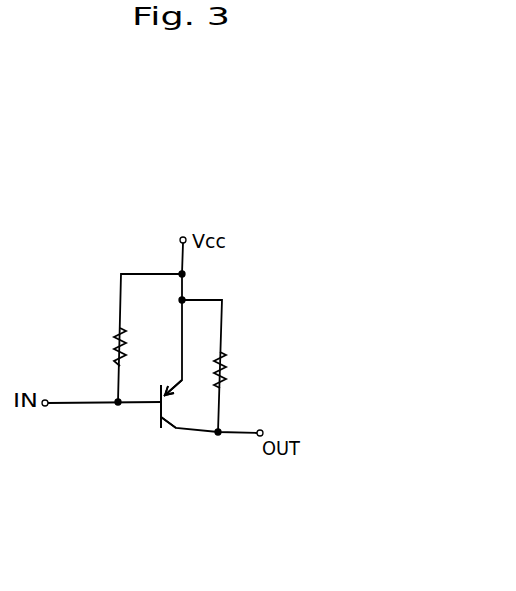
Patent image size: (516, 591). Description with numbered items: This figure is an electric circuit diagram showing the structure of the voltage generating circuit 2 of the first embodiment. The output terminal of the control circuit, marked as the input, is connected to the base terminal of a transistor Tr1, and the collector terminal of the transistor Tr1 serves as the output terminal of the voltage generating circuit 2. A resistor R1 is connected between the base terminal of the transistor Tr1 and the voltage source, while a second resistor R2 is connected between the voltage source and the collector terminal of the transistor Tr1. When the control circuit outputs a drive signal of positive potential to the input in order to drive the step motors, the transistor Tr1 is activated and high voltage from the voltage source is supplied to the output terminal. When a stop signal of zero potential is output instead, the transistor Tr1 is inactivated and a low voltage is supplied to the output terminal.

The voltage generating circuit 2 is at (251, 287).
The resistor R1 is at (113, 338).
The resistor R2 is at (230, 378).
The transistor Tr1 is at (160, 423).